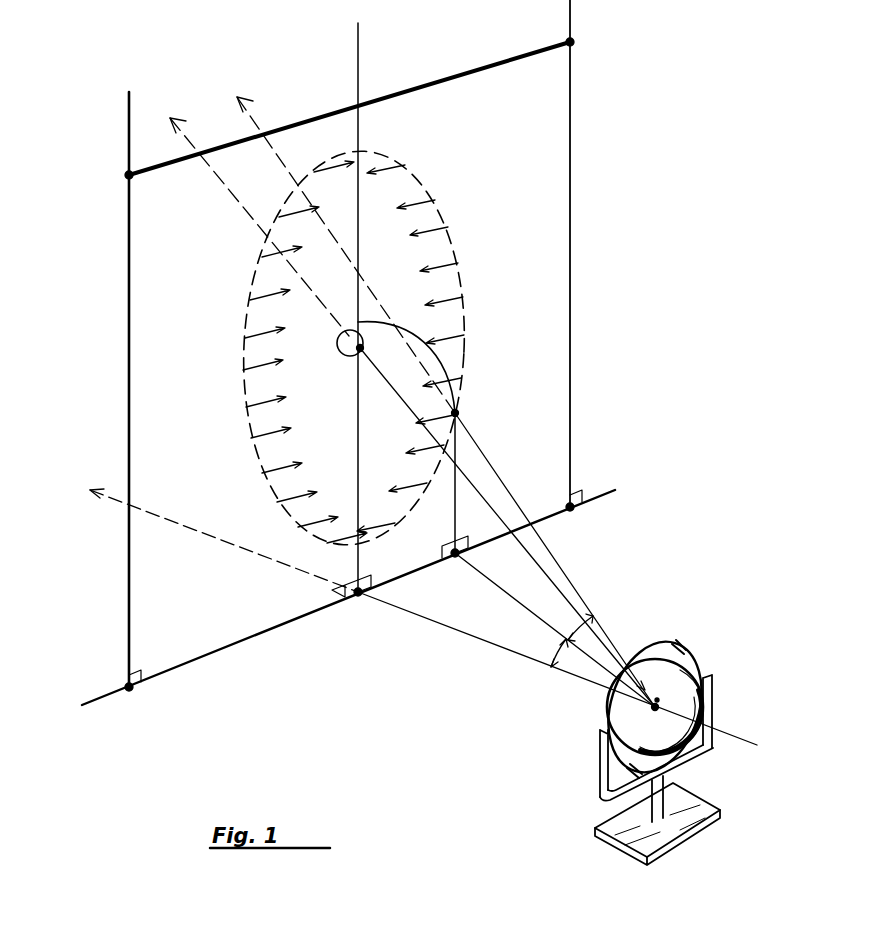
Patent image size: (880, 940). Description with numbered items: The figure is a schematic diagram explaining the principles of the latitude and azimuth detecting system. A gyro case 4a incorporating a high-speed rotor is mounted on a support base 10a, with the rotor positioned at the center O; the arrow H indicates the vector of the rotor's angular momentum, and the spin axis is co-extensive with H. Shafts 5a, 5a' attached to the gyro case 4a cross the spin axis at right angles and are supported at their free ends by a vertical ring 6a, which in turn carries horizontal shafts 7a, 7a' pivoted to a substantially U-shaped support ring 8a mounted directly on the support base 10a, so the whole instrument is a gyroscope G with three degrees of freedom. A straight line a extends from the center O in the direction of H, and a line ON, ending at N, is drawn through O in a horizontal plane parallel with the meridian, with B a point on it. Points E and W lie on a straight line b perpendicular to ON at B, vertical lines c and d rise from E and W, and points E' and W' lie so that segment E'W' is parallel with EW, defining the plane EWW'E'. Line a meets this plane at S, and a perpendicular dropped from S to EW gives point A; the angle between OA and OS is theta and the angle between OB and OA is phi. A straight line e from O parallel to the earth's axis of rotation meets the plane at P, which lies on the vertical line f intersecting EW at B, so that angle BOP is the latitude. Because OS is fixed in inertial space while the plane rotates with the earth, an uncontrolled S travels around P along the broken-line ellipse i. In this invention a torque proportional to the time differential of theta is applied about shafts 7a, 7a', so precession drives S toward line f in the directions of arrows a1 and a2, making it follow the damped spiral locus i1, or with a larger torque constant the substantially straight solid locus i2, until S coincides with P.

The upper western corner point W' is at (109, 183).
The upper eastern corner point E' is at (583, 43).
The western point on line b W is at (139, 703).
The eastern point on line b E is at (579, 521).
The vertical straight line from W d is at (127, 572).
The vertical straight line from E c is at (571, 325).
The vertical straight line through P f is at (359, 125).
The horizontal straight line b is at (104, 696).
The meridian direction point N is at (410, 612).
The foot of perpendicular from S A is at (455, 557).
The point on line ON B is at (358, 596).
The intersection point of spin-axis line with plane S is at (459, 412).
The intersection point of earth-axis line with plane P is at (363, 347).
The straight line along spin axis a is at (496, 473).
The straight line parallel to earth's axis e is at (480, 506).
The elliptical locus of point S i is at (465, 282).
The spiral locus of point S i1 is at (410, 330).
The straight locus of point S i2 is at (380, 354).
The precession direction arrows a1 is at (460, 250).
The precession direction arrows a2 is at (246, 368).
The gyroscope G is at (640, 638).
The angular momentum vector H is at (658, 702).
The center of gyro O is at (655, 710).
The gyro case 4a is at (690, 708).
The shaft 5a is at (700, 641).
The shaft 5a' is at (601, 773).
The vertical ring 6a is at (672, 648).
The horizontal shaft 7a is at (586, 743).
The horizontal shaft 7a' is at (732, 707).
The support ring 8a is at (598, 742).
The support base 10a is at (688, 808).